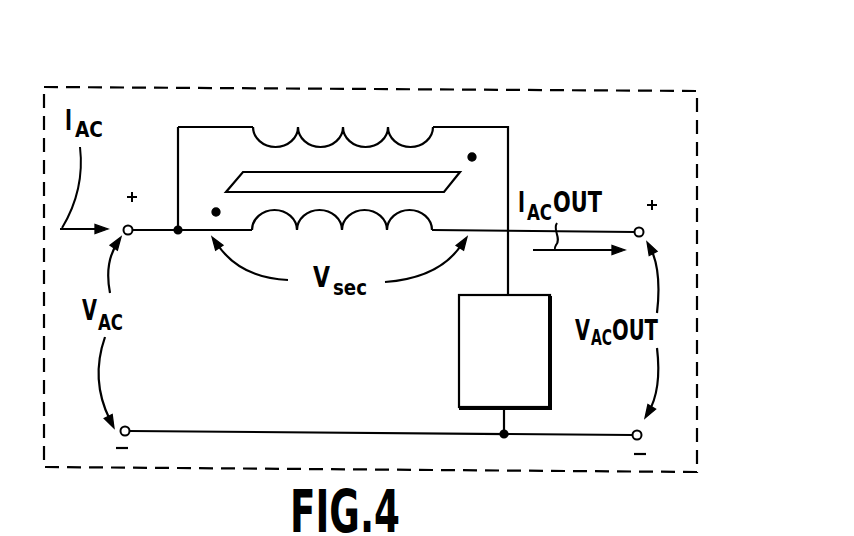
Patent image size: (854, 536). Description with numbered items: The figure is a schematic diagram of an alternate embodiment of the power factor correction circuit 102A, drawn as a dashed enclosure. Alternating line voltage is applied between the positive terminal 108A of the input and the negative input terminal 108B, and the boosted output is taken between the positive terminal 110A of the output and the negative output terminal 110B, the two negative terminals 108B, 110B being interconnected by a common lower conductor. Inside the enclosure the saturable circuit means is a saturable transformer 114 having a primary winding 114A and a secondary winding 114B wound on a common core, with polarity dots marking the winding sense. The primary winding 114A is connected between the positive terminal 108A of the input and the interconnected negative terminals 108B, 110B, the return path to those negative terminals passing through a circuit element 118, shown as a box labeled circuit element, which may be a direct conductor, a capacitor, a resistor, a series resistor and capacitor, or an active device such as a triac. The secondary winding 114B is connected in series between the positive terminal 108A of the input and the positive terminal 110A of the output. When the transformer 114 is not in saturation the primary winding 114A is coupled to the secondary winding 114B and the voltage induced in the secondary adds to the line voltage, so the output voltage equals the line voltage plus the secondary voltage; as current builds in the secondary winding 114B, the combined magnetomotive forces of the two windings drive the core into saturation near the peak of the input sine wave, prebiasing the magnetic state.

The power factor correction circuit 102A is at (700, 380).
The positive terminal of the input 108A is at (125, 226).
The negative input terminal 108B is at (129, 427).
The positive terminal of the output 110A is at (638, 227).
The negative output terminal 110B is at (636, 430).
The saturable transformer 114 is at (390, 128).
The primary winding 114A is at (393, 132).
The secondary winding 114B is at (436, 229).
The circuit element 118 is at (458, 392).